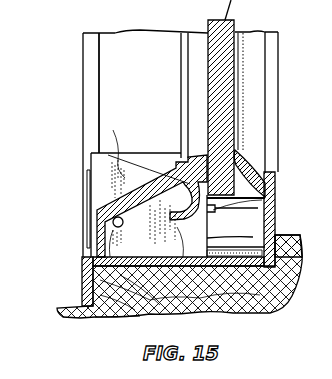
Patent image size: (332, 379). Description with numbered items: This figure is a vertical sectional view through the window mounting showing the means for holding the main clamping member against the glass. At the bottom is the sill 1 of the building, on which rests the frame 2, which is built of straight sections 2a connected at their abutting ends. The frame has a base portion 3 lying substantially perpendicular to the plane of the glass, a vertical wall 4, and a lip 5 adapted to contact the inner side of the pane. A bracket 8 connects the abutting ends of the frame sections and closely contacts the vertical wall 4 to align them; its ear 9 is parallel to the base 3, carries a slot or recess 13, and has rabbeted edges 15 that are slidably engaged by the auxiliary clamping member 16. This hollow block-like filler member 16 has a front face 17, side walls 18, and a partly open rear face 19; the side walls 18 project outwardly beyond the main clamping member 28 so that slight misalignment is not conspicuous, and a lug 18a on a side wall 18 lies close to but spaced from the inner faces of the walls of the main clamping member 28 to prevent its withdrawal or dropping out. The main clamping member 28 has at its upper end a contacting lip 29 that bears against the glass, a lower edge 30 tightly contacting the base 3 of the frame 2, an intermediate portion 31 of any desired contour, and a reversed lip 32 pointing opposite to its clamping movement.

The sill 1 is at (262, 313).
The frame 2 is at (243, 313).
The straight sections 2a is at (83, 85).
The base portion 3 is at (123, 316).
The vertical wall 4 is at (276, 227).
The lip 5 is at (262, 160).
The bracket 8 is at (253, 218).
The ear 9 is at (240, 186).
The slot or recess 13 is at (278, 191).
The rabbeted edges 15 is at (298, 258).
The auxiliary clamping member 16 is at (100, 165).
The front face 17 is at (87, 183).
The side walls 18 is at (143, 115).
The lug 18a is at (130, 292).
The rear face 19 is at (271, 130).
The main clamping member 28 is at (110, 202).
The contacting lip 29 is at (196, 153).
The lower edge 30 is at (97, 253).
The intermediate portion 31 is at (83, 128).
The reversed lip 32 is at (222, 269).